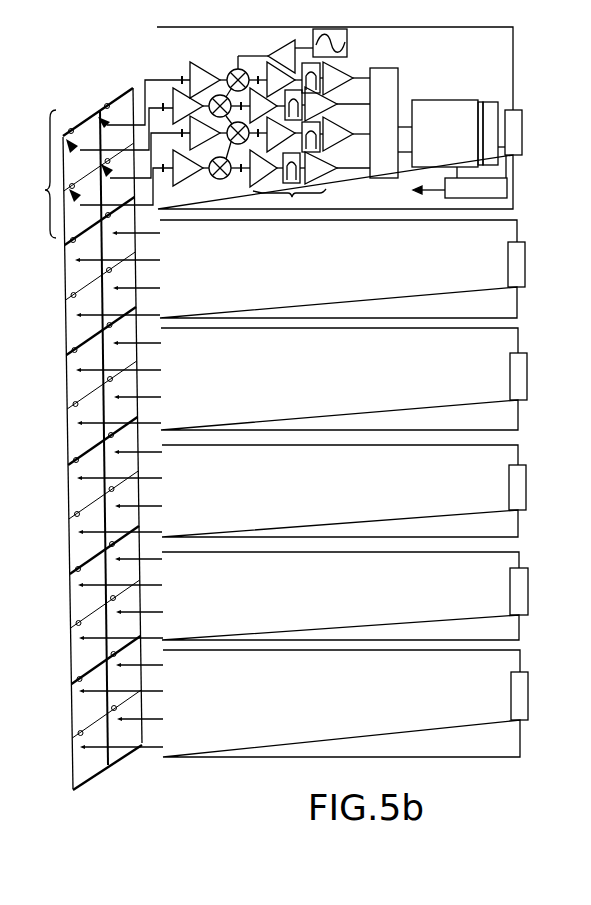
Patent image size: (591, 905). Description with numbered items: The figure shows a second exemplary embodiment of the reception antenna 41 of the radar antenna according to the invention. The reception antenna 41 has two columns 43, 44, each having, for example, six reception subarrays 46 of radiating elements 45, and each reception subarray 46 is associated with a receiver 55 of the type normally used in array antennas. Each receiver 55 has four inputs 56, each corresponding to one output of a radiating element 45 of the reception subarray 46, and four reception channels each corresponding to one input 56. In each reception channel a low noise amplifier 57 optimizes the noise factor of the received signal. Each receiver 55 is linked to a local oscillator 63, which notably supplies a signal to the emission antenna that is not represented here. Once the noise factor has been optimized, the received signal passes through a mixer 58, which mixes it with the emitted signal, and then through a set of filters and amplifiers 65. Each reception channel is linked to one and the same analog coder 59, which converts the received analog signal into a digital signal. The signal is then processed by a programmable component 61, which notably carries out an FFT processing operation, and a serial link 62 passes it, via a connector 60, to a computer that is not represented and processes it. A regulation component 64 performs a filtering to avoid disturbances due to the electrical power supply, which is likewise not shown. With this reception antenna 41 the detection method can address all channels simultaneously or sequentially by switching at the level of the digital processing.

The reception antenna 41 is at (143, 73).
The column 43 is at (104, 781).
The column 44 is at (132, 761).
The radiating element 45 is at (68, 232).
The reception subarray 46 is at (34, 174).
The receiver 55 is at (484, 27).
The input 56 is at (71, 191).
The low noise amplifier 57 is at (193, 184).
The mixer 58 is at (221, 180).
The analog coder 59 is at (383, 179).
The connector 60 is at (523, 128).
The programmable component 61 is at (445, 99).
The serial link 62 is at (491, 101).
The local oscillator 63 is at (348, 42).
The regulation component 64 is at (509, 193).
The set of filters and amplifiers 65 is at (292, 200).